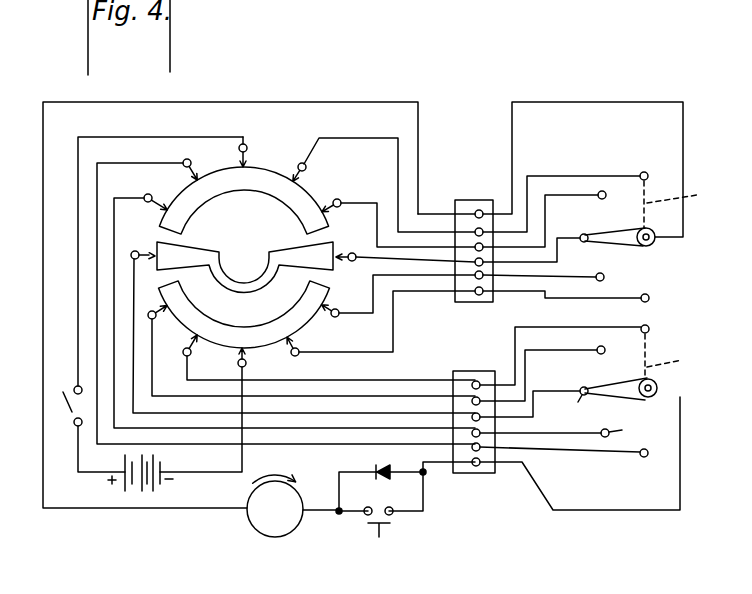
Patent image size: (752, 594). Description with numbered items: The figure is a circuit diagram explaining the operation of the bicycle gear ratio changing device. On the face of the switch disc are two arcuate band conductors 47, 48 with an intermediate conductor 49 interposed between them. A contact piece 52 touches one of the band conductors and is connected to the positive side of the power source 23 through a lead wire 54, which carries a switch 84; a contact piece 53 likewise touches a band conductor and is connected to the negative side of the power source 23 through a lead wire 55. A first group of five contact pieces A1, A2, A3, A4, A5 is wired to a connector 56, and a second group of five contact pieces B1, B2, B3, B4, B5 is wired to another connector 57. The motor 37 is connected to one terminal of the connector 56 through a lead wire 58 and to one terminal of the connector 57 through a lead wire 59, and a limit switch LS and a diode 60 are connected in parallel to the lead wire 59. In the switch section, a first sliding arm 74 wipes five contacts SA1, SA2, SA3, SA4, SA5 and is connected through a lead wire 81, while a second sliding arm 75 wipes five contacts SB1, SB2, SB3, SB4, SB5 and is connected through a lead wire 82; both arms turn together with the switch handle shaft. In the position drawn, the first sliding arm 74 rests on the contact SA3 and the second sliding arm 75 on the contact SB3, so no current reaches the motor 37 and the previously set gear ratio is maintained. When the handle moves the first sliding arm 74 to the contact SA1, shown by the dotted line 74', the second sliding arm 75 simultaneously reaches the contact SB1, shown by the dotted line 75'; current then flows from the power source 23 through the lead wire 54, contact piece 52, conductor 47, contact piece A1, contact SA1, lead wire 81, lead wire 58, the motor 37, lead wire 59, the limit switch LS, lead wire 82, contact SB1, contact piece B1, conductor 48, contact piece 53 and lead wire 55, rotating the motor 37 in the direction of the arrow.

The power source 23 is at (143, 498).
The motor 37 is at (277, 538).
The arcuate band conductor 47 is at (268, 174).
The arcuate band conductor 48 is at (262, 330).
The intermediate conductor 49 is at (228, 252).
The contact piece 52 is at (247, 146).
The contact piece 53 is at (246, 363).
The lead wire 54 is at (134, 136).
The lead wire 55 is at (205, 472).
The connector 56 is at (468, 203).
The connector 57 is at (466, 375).
The lead wire 58 is at (273, 102).
The lead wire 59 is at (323, 513).
The diode 60 is at (385, 480).
The first sliding arm 74 is at (626, 249).
The dotted-line position of first sliding arm 74' is at (689, 204).
The second sliding arm 75 is at (652, 410).
The dotted-line position of second sliding arm 75' is at (683, 356).
The lead wire 81 is at (576, 103).
The lead wire 82 is at (608, 510).
The switch 84 is at (67, 408).
The limit switch LS is at (381, 535).
The contact piece A1 is at (384, 185).
The contact piece A2 is at (398, 223).
The contact piece A3 is at (405, 272).
The contact piece A4 is at (399, 310).
The contact piece A5 is at (381, 337).
The contact piece B1 is at (329, 357).
The contact piece B2 is at (306, 345).
The contact piece B3 is at (298, 321).
The contact piece B4 is at (294, 302).
The contact piece B5 is at (286, 295).
The contact SA1 is at (571, 189).
The contact SA2 is at (562, 217).
The contact SA3 is at (546, 252).
The contact SA4 is at (562, 283).
The contact SA5 is at (589, 305).
The contact SB1 is at (586, 355).
The contact SB2 is at (561, 371).
The contact SB3 is at (544, 409).
The contact SB4 is at (572, 438).
The contact SB5 is at (573, 471).